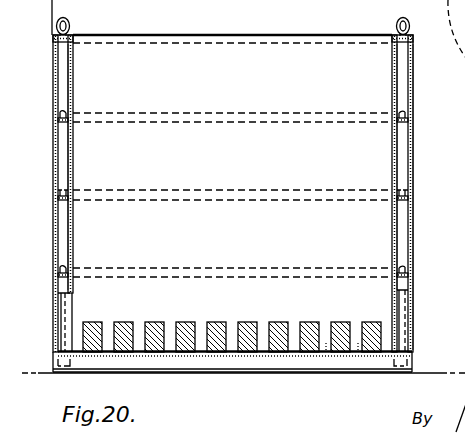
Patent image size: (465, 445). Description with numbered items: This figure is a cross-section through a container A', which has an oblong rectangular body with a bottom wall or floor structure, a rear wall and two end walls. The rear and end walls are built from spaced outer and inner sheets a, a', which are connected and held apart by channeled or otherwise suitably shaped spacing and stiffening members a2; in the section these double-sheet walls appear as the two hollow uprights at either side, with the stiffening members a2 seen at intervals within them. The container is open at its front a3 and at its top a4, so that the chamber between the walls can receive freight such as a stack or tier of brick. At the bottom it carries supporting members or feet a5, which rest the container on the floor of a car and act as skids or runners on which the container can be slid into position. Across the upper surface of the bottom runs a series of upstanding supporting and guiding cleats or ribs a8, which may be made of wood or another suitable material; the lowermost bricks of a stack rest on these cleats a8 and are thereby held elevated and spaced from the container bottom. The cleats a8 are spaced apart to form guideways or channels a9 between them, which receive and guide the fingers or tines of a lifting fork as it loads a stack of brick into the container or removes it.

The outer sheet a is at (229, 186).
The inner sheet a' is at (231, 167).
The container A' is at (427, 197).
The spacing and stiffening member a2 is at (427, 266).
The front a3 is at (342, 228).
The top a4 is at (136, 34).
The supporting members or feet a5 is at (225, 364).
The supporting and guiding cleats or ribs a8 is at (238, 321).
The guideways or channels a9 is at (358, 343).